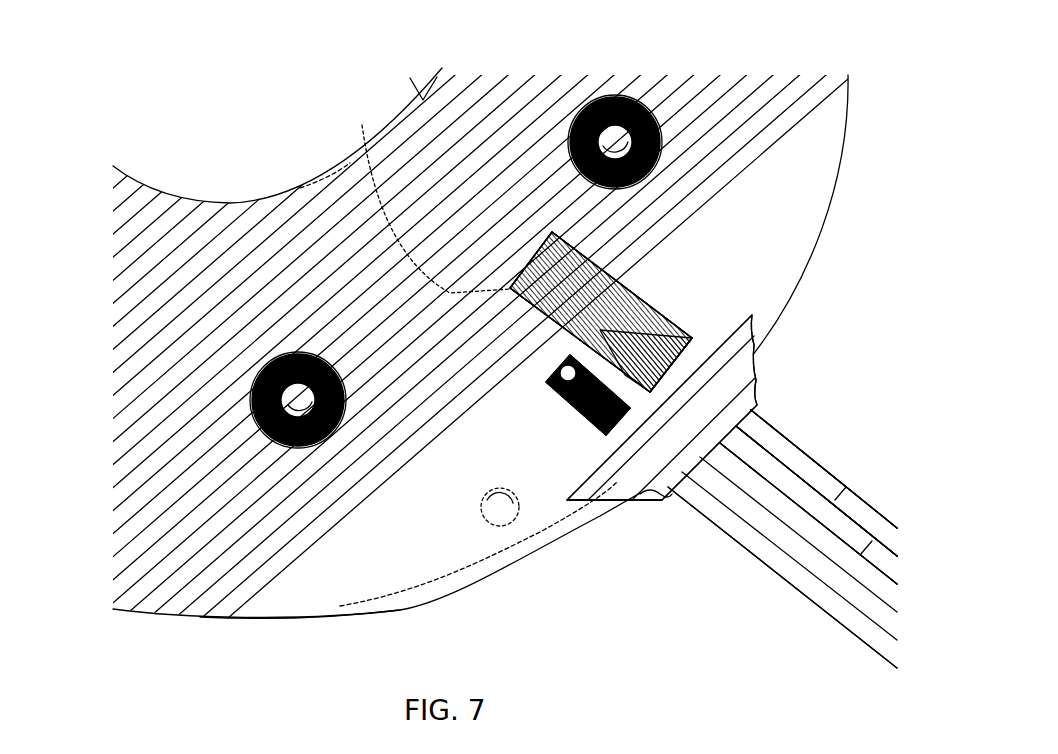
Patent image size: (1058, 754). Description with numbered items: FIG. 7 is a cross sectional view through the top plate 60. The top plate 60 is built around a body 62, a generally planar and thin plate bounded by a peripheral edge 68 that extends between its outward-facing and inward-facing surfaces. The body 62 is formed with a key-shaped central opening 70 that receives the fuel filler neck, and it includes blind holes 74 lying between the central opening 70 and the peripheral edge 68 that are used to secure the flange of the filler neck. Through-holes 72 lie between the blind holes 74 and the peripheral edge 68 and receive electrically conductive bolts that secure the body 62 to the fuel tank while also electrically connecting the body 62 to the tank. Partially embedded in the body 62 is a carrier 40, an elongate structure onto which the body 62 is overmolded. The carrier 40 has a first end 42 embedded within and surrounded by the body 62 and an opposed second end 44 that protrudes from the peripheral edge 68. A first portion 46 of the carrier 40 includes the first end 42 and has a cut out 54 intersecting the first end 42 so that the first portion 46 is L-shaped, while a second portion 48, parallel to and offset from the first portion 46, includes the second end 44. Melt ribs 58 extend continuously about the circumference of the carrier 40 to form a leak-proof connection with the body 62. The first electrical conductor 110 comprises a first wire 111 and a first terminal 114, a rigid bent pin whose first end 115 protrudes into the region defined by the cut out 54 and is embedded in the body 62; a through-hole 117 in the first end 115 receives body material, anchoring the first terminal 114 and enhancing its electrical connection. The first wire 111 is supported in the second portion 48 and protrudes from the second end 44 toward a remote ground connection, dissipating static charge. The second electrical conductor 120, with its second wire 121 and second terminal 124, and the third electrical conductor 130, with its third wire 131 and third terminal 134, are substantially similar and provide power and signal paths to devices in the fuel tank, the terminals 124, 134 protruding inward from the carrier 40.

The top plate 60 is at (250, 151).
The key-shaped central opening 70 is at (340, 170).
The cut out 54 is at (425, 192).
The first end 42 is at (542, 250).
The blind holes 74 is at (280, 377).
The melt ribs 58 is at (612, 207).
The carrier 40 is at (655, 248).
The first portion 46 is at (655, 248).
The second portion 48 is at (748, 385).
The third terminal 134 is at (690, 277).
The second terminal 124 is at (700, 320).
The first terminal 114 is at (600, 432).
The through-hole 117 is at (595, 440).
The first end 115 is at (568, 402).
The second end 44 is at (678, 497).
The first electrical conductor 110 is at (790, 590).
The first wire 111 is at (790, 590).
The third electrical conductor 130 is at (838, 492).
The third wire 131 is at (838, 492).
The second electrical conductor 120 is at (868, 548).
The second wire 121 is at (868, 548).
The through-holes 72 is at (490, 518).
The body 62 is at (125, 614).
The peripheral edge 68 is at (222, 622).